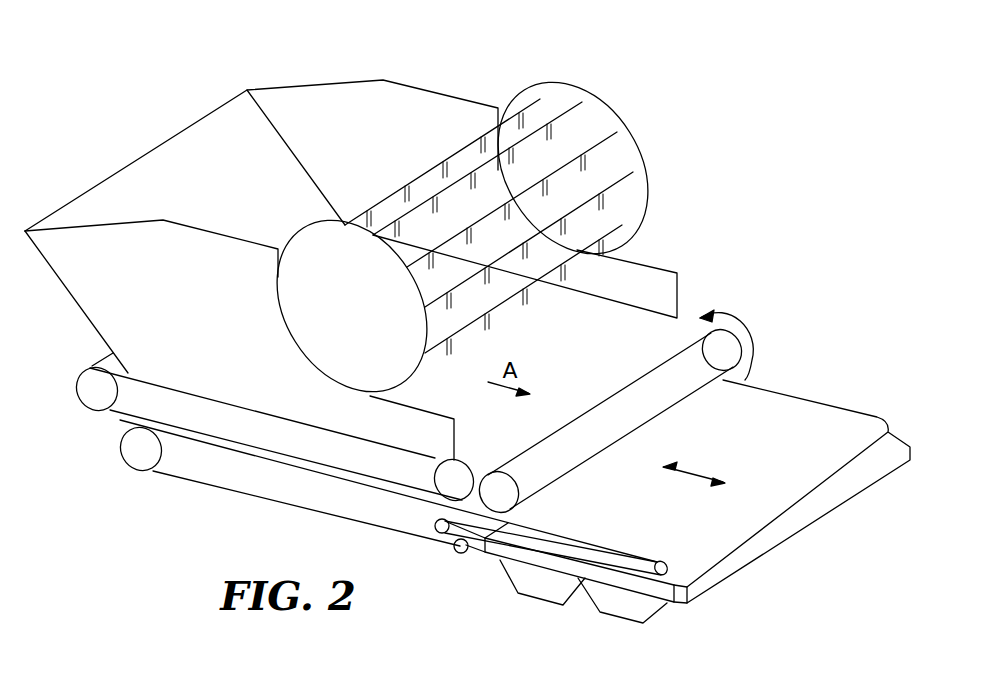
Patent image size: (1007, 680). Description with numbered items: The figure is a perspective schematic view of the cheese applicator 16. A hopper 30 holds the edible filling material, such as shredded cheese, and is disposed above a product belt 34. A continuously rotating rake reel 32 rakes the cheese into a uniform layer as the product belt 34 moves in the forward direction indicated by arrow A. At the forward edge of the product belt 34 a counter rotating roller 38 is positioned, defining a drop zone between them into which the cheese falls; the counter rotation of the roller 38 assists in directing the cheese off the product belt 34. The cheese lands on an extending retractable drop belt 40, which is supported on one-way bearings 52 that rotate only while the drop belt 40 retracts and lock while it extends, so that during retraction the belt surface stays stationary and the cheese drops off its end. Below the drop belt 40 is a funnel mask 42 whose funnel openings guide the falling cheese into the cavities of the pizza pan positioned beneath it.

The applicator 16 is at (715, 142).
The hopper 30 is at (360, 112).
The rake reel 32 is at (594, 140).
The product belt 34 is at (635, 322).
The counter rotating roller 38 is at (723, 338).
The retractable drop belt 40 is at (813, 417).
The funnel mask 42 is at (553, 564).
The one-way bearings 52 is at (445, 534).